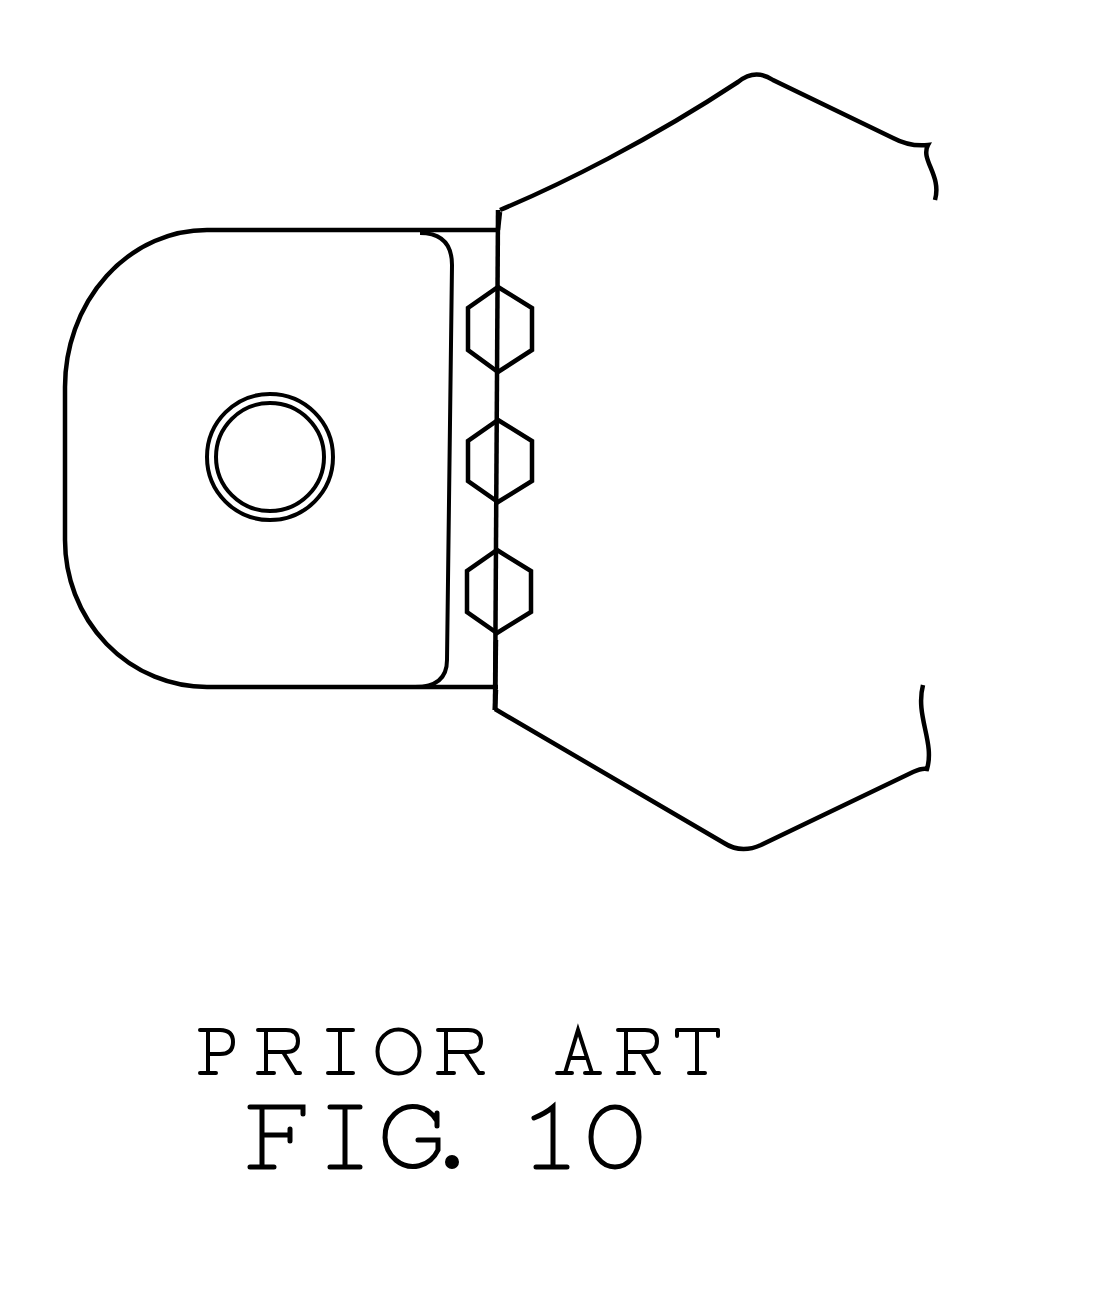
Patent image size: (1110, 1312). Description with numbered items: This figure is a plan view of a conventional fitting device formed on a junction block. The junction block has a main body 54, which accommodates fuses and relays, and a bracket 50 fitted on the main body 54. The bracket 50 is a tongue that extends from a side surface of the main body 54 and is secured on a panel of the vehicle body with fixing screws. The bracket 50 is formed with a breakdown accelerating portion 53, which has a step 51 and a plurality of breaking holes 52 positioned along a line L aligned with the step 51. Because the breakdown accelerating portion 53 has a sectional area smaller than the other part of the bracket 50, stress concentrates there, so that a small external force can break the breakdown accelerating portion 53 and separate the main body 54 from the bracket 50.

The bracket 50 is at (228, 688).
The step 51 is at (497, 212).
The breaking holes 52 is at (485, 330).
The breakdown accelerating portion 53 is at (530, 672).
The main body 54 is at (785, 763).
The line L is at (497, 265).